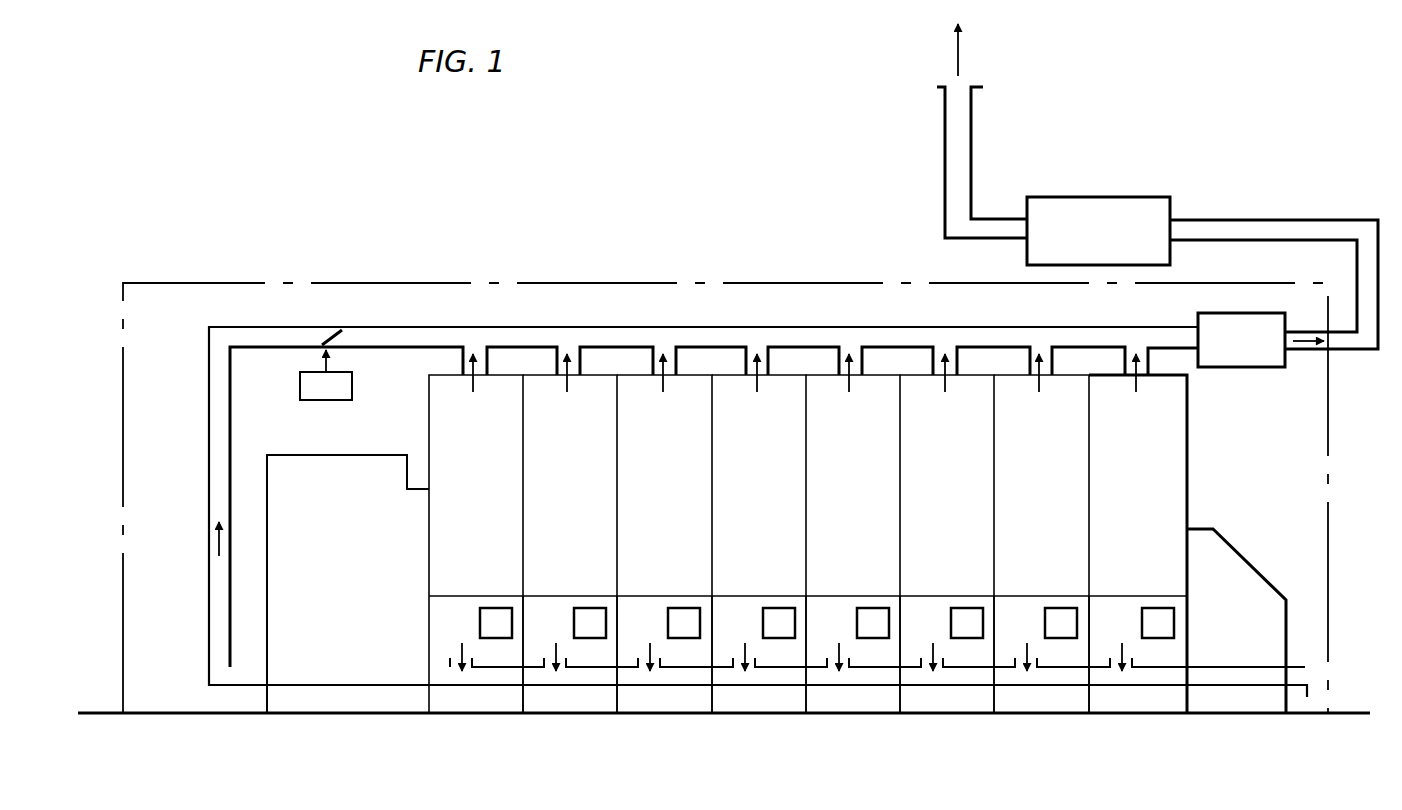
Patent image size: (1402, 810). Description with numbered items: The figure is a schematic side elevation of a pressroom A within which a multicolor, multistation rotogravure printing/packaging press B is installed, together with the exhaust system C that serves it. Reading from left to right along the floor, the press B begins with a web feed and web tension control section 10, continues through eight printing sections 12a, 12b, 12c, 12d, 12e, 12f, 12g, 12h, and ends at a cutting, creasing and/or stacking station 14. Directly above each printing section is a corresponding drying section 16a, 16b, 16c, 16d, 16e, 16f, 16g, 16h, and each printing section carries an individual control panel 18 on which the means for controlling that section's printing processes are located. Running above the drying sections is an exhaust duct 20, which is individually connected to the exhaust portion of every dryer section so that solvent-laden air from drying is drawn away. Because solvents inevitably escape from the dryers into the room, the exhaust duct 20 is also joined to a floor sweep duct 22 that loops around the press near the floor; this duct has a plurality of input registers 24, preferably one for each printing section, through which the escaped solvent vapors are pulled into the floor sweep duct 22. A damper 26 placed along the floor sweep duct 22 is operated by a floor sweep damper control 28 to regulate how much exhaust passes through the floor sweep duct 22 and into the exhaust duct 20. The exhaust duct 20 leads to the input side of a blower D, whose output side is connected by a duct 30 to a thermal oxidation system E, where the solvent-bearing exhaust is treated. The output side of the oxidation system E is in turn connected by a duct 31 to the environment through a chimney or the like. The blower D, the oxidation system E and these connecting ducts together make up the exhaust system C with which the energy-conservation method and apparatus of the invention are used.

The pressroom A is at (1298, 514).
The rotogravure printing/packaging press B is at (472, 704).
The exhaust system C is at (641, 332).
The blower D is at (1247, 374).
The thermal oxidation system E is at (1160, 172).
The web feed and web tension control section 10 is at (372, 617).
The printing section 12a is at (500, 706).
The printing section 12b is at (590, 706).
The printing section 12c is at (697, 706).
The printing section 12d is at (793, 706).
The printing section 12e is at (880, 706).
The printing section 12f is at (975, 706).
The printing section 12g is at (1075, 706).
The printing section 12h is at (1172, 706).
The cutting, creasing and/or stacking station 14 is at (1248, 639).
The drying section 16a is at (494, 478).
The drying section 16b is at (590, 476).
The drying section 16c is at (684, 478).
The drying section 16d is at (779, 480).
The drying section 16e is at (872, 478).
The drying section 16f is at (970, 478).
The drying section 16g is at (1060, 480).
The drying section 16h is at (1152, 480).
The control panel 18 is at (498, 607).
The exhaust duct 20 is at (787, 340).
The floor sweep duct 22 is at (209, 424).
The input register 24 is at (447, 658).
The damper 26 is at (330, 345).
The floor sweep damper control 28 is at (325, 406).
The duct 30 is at (1366, 236).
The duct 31 is at (952, 180).